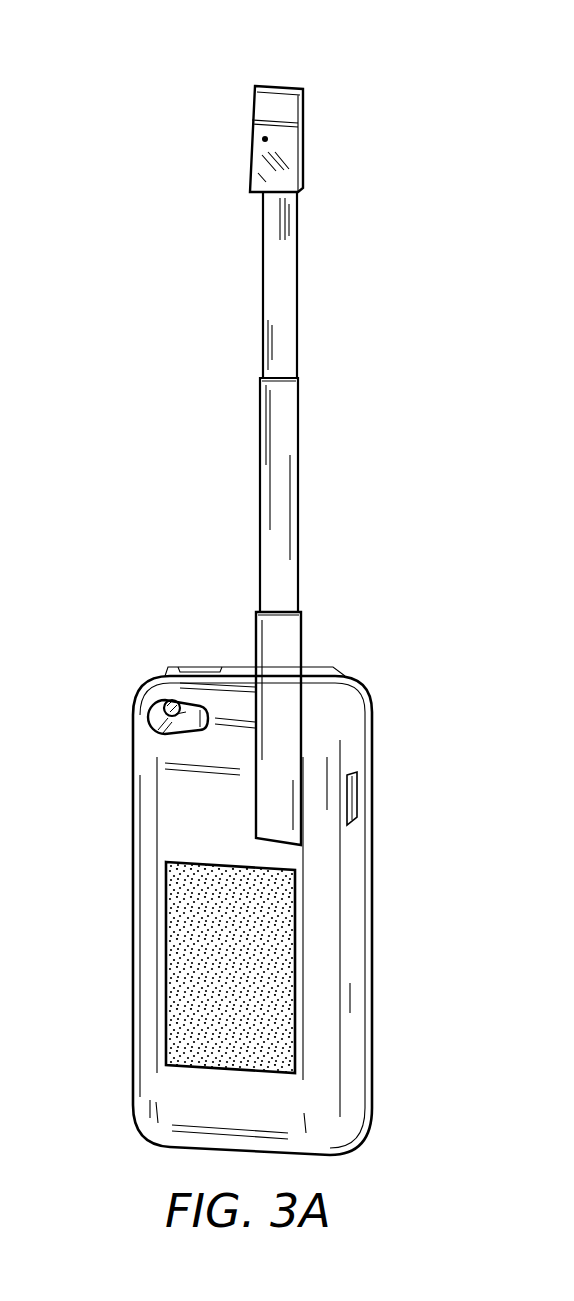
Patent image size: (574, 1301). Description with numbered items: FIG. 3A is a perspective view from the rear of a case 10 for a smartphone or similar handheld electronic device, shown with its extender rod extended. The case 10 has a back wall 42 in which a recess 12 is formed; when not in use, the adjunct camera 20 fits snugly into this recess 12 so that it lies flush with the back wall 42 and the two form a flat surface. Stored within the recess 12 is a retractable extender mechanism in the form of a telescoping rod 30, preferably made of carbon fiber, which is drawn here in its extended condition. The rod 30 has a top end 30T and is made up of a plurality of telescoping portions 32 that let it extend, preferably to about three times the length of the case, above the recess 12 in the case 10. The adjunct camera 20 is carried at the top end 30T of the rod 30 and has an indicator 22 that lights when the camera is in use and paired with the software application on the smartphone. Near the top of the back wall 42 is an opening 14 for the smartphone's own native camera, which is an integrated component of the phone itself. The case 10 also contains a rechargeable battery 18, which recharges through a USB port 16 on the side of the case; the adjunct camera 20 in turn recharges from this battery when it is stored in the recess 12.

The case 10 is at (422, 890).
The recess 12 is at (302, 733).
The opening 14 is at (152, 716).
The USB port 16 is at (356, 806).
The rechargeable battery 18 is at (280, 1027).
The adjunct camera 20 is at (288, 117).
The indicator 22 is at (263, 141).
The telescoping rod 30 is at (247, 518).
The top end 30T is at (296, 196).
The telescoping portions 32 is at (280, 287).
The back wall 42 is at (148, 1106).